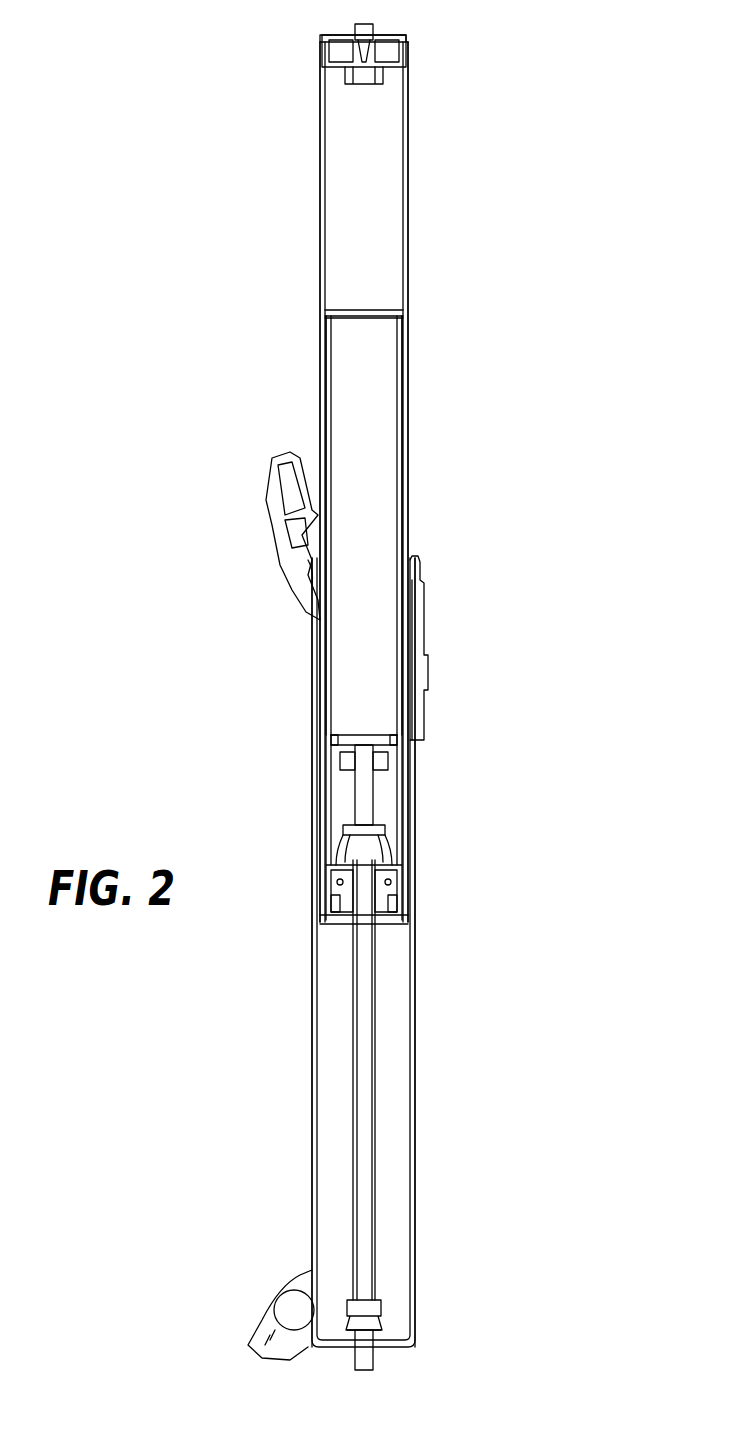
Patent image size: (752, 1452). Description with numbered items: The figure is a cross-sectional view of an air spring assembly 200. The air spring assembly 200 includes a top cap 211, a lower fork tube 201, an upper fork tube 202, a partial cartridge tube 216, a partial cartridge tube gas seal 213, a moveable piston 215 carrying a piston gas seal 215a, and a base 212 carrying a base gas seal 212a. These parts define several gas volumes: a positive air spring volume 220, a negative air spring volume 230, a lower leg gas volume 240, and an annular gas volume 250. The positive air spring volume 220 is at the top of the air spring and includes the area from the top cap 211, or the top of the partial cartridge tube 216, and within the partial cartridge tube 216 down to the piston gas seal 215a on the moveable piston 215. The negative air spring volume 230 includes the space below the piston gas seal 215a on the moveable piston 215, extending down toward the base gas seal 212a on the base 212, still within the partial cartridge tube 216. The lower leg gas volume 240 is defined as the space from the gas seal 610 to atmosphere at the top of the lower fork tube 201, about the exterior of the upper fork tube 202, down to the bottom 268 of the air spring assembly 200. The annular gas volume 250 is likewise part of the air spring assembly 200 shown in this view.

The air spring assembly 200 is at (542, 86).
The lower fork tube 201 is at (313, 1040).
The upper fork tube 202 is at (320, 165).
The top cap 211 is at (405, 38).
The base 212 is at (325, 907).
The base gas seal 212a is at (330, 903).
The partial cartridge tube gas seal 213 is at (326, 320).
The moveable piston 215 is at (352, 728).
The piston gas seal 215a is at (330, 740).
The partial cartridge tube 216 is at (328, 396).
The positive air spring volume 220 is at (439, 735).
The negative air spring volume 230 is at (439, 741).
The lower leg gas volume 240 is at (510, 1335).
The annular gas volume 250 is at (216, 918).
The bottom 268 is at (393, 1332).
The gas seal 610 is at (306, 612).